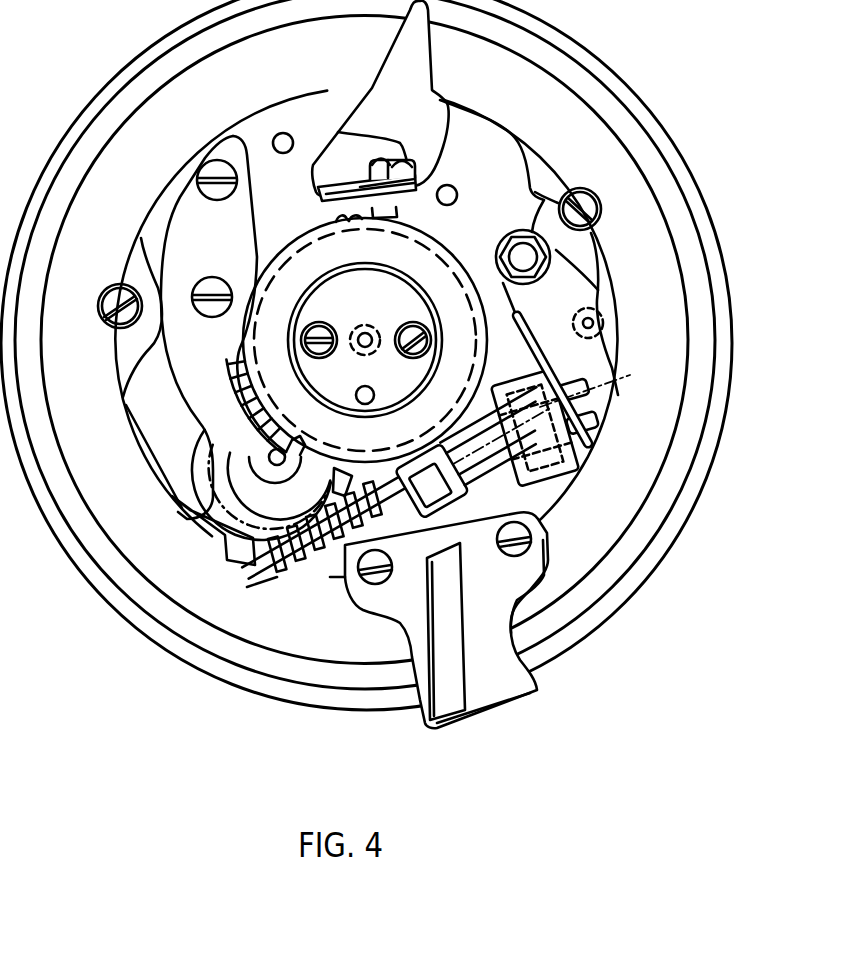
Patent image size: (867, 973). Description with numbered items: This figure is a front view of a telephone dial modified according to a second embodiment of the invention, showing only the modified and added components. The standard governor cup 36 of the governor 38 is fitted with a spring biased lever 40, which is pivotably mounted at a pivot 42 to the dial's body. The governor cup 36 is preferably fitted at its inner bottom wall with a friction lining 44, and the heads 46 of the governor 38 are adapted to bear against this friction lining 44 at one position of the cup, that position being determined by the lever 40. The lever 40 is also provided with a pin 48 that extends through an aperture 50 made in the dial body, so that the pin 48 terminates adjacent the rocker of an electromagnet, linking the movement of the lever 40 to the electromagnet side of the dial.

The governor cup 36 is at (592, 463).
The governor 38 is at (547, 508).
The spring biased lever 40 is at (530, 258).
The pivot 42 is at (598, 256).
The friction lining 44 is at (610, 404).
The heads 46 is at (552, 507).
The pin 48 is at (603, 323).
The aperture 50 is at (560, 303).